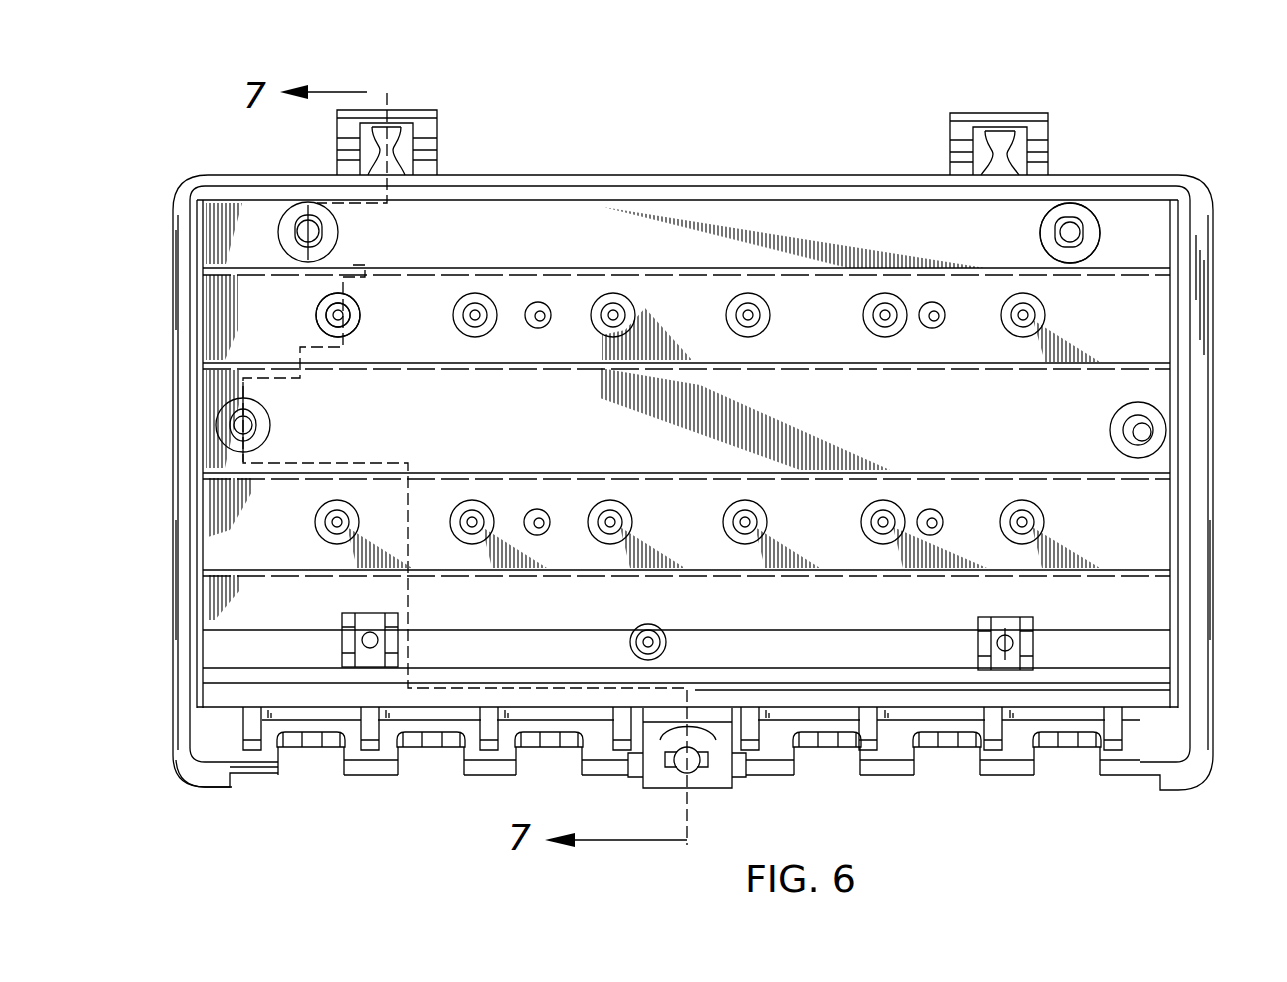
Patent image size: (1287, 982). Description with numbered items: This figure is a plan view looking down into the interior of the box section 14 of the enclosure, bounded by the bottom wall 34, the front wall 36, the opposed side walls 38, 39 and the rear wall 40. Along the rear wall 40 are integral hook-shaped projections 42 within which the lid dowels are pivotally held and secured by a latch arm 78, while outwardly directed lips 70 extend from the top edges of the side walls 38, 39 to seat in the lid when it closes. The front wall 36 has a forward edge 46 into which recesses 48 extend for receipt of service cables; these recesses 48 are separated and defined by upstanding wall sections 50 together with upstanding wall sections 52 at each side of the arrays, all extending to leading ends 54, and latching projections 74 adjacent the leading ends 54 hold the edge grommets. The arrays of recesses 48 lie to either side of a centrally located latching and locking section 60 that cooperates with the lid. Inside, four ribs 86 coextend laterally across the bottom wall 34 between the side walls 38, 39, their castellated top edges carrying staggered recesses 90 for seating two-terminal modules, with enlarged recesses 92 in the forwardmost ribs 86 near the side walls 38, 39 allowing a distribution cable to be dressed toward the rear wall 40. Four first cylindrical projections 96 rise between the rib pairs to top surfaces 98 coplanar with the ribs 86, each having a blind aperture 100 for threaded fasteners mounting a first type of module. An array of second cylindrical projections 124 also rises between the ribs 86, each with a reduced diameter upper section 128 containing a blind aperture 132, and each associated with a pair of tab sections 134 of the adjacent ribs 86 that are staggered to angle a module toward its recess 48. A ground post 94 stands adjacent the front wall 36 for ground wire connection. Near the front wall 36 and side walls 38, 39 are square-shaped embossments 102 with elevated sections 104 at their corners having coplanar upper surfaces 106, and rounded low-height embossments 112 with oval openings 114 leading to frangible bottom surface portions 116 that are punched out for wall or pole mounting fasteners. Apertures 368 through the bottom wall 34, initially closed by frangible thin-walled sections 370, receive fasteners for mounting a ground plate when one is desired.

The box section 14 is at (170, 712).
The bottom wall 34 is at (838, 645).
The front wall 36 is at (205, 805).
The side wall 38 is at (172, 577).
The side wall 39 is at (1215, 576).
The rear wall 40 is at (690, 176).
The hook-shaped projection 42 is at (1040, 125).
The forward edge 46 is at (282, 788).
The recess 48 is at (525, 750).
The upstanding wall section 50 is at (345, 745).
The upstanding wall section 52 is at (252, 785).
The leading end 54 is at (388, 775).
The latching and locking section 60 is at (705, 768).
The lip 70 is at (172, 300).
The latching projection 74 is at (365, 778).
The latch arm 78 is at (990, 128).
The rib 86 is at (1108, 270).
The recess 90 is at (410, 372).
The enlarged recess 92 is at (290, 566).
The ground post 94 is at (645, 640).
The cylindrical projection 96 is at (548, 312).
The top surface 98 is at (535, 327).
The blind aperture 100 is at (542, 320).
The square-shaped embossment 102 is at (350, 612).
The elevated section 104 is at (395, 612).
The upper surface 106 is at (375, 668).
The rounded low-height embossment 112 is at (270, 428).
The oval opening 114 is at (250, 415).
The frangible bottom surface portion 116 is at (258, 408).
The cylindrical projection 124 is at (342, 336).
The reduced diameter upper section 128 is at (350, 318).
The blind aperture 132 is at (342, 312).
The tab section 134 is at (318, 312).
The aperture 368 is at (1090, 243).
The thin-walled section 370 is at (1070, 226).